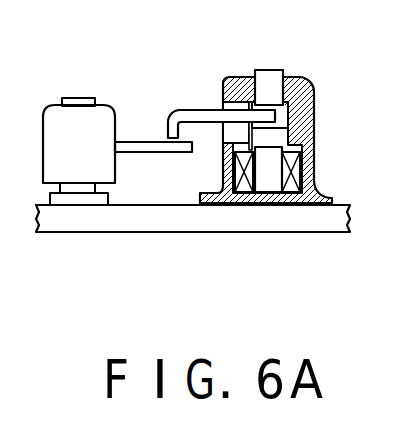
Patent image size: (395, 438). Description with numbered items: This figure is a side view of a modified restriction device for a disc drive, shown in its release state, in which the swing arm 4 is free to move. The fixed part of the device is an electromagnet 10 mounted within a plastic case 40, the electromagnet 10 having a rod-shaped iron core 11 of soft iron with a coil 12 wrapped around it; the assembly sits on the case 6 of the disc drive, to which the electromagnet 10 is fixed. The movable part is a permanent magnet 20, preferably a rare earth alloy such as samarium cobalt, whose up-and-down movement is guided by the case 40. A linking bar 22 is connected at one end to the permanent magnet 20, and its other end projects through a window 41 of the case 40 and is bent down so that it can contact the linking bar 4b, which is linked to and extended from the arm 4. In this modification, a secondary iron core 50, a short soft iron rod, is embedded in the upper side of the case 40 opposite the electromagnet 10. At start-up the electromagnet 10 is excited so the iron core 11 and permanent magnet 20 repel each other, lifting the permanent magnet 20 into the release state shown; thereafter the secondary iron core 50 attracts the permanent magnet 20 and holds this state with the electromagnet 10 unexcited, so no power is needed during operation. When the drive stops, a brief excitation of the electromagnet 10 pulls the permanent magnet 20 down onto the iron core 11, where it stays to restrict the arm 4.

The swing arm 4 is at (53, 108).
The linking bar 4b is at (130, 156).
The case 6 is at (312, 222).
The electromagnet 10 is at (253, 229).
The iron core 11 is at (268, 183).
The coil 12 is at (245, 190).
The permanent magnet 20 is at (314, 109).
The linking bar 22 is at (177, 110).
The case 40 is at (307, 92).
The window 41 is at (223, 130).
The secondary iron core 50 is at (270, 82).